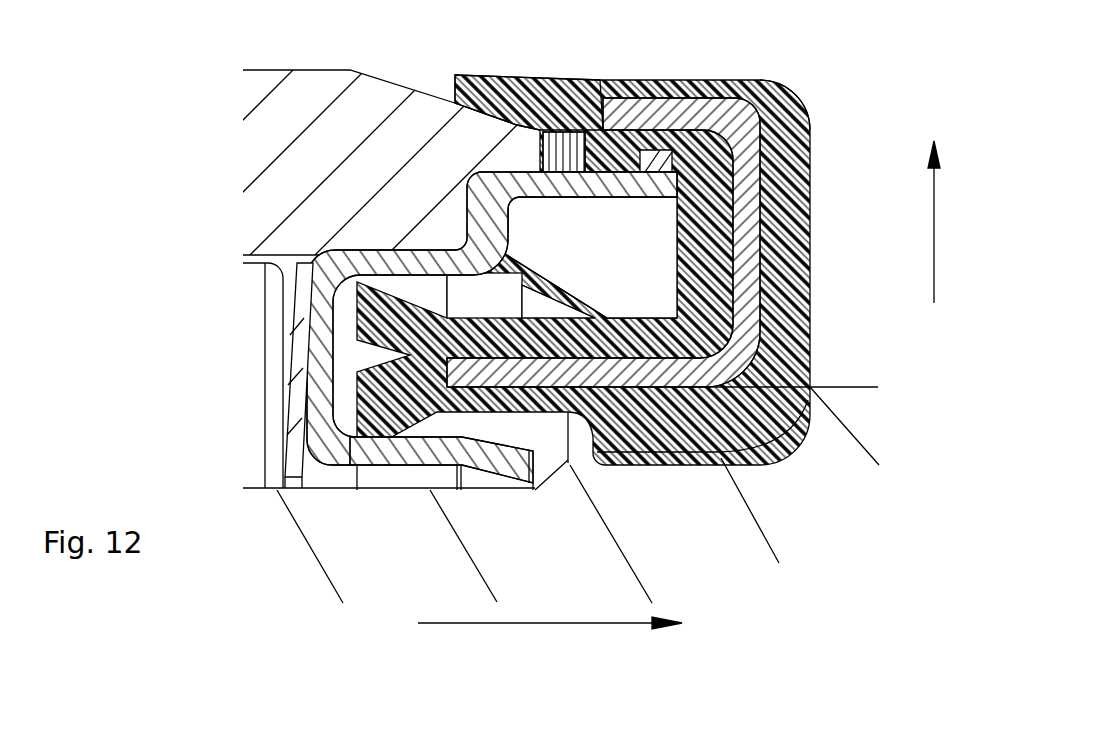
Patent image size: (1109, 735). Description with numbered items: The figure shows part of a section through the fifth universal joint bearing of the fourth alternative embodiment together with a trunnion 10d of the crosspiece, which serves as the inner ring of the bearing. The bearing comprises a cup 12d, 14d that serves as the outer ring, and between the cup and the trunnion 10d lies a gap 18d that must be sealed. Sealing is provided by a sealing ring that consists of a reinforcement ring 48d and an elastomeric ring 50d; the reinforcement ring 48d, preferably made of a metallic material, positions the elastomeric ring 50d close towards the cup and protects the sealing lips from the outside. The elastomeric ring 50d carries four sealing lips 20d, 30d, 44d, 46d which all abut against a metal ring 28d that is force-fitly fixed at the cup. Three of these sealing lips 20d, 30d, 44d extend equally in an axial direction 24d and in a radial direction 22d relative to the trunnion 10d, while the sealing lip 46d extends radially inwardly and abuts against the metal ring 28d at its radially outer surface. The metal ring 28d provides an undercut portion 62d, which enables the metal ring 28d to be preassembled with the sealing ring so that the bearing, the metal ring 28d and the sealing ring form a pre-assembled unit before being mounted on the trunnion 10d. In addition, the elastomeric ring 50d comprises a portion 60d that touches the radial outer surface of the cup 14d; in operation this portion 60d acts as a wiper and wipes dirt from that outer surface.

The trunnion 10d is at (841, 541).
The cup 12d is at (299, 162).
The cup 14d is at (282, 134).
The gap 18d is at (645, 285).
The sealing lip 20d is at (372, 293).
The radial direction 22d is at (931, 241).
The axial direction 24d is at (550, 608).
The metal ring 28d is at (323, 333).
The sealing lip 30d is at (535, 265).
The sealing lip 44d is at (390, 420).
The sealing lip 46d is at (540, 132).
The reinforcement ring 48d is at (752, 125).
The elastomeric ring 50d is at (735, 90).
The portion 60d is at (487, 83).
The undercut portion 62d is at (655, 150).